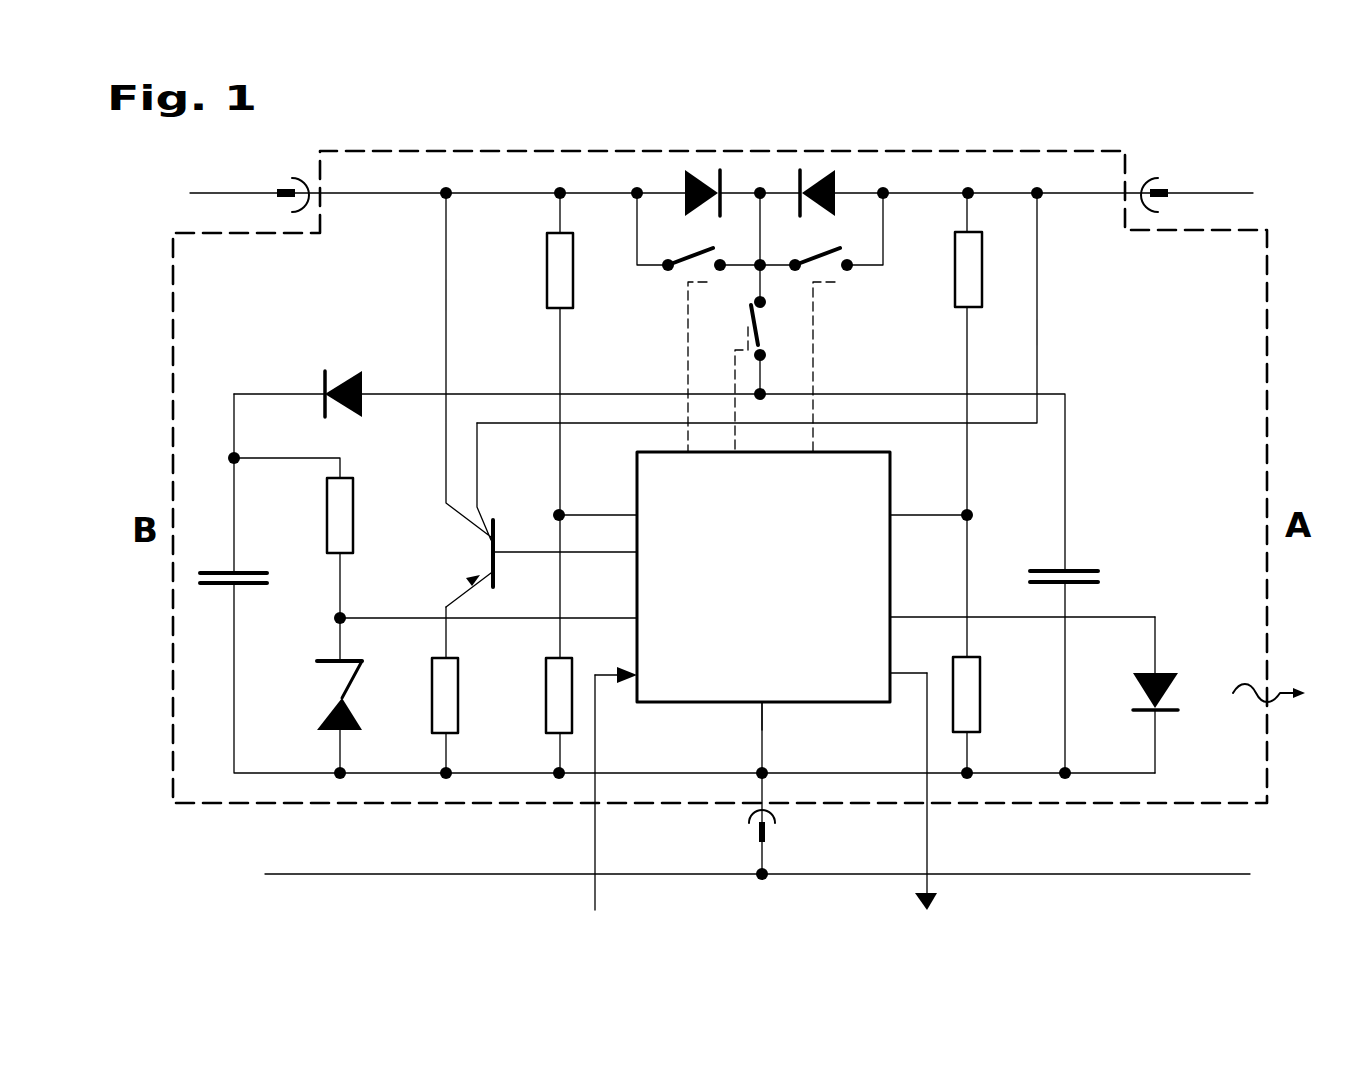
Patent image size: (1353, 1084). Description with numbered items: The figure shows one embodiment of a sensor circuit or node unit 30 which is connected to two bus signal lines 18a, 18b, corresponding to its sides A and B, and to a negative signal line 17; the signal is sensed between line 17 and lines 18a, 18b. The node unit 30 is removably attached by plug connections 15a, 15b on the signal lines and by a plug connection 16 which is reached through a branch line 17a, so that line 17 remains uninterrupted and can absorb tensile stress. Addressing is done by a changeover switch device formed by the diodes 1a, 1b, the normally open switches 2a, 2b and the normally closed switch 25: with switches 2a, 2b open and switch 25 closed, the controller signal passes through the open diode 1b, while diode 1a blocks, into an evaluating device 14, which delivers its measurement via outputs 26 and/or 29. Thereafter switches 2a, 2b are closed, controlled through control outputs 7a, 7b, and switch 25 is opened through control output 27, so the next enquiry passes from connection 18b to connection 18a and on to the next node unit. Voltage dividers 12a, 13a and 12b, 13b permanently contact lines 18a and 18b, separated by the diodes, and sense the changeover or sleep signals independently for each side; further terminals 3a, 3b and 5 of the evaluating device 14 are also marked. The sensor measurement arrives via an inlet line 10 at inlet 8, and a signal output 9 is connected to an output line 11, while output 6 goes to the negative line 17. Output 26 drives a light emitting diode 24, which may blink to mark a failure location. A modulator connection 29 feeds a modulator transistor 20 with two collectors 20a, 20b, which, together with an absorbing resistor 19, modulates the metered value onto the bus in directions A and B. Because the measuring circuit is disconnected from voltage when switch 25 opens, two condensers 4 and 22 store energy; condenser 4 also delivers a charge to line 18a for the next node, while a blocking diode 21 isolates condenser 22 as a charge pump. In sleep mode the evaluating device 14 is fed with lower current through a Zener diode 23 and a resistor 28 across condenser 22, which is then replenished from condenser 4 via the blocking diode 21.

The diode 1a is at (813, 170).
The diode 1b is at (705, 170).
The switch 2a is at (840, 275).
The switch 2b is at (678, 273).
The control output 3a is at (902, 512).
The control output 3b is at (622, 514).
The condenser 4 is at (1070, 562).
The input terminal 5 is at (501, 617).
The output 6 is at (768, 696).
The control output 7a is at (812, 391).
The control output 7b is at (685, 391).
The inlet 8 is at (629, 675).
The signal output 9 is at (894, 670).
The inlet line 10 is at (513, 897).
The output line 11 is at (902, 905).
The resistor of voltage divider 12a is at (1002, 694).
The resistor of voltage divider 12b is at (517, 695).
The resistor of voltage divider 13a is at (1006, 269).
The resistor of voltage divider 13b is at (520, 270).
The evaluating device 14 is at (903, 452).
The plug connection 15a is at (1155, 166).
The plug connection 15b is at (288, 167).
The plug connection 16 is at (787, 829).
The negative signal line 17 is at (1006, 852).
The branch line 17a is at (745, 853).
The signal line 18a is at (1197, 178).
The signal line 18b is at (249, 178).
The absorbing resistor 19 is at (418, 695).
The modulator transistor 20 is at (454, 563).
The line 20a is at (1052, 333).
The line 20b is at (429, 298).
The blocking diode 21 is at (298, 370).
The condenser 22 is at (223, 603).
The Zener diode 23 is at (317, 695).
The light emitting diode 24 is at (1158, 668).
The switch 25 is at (732, 337).
The output 26 is at (996, 615).
The control output 27 is at (745, 414).
The resistor 28 is at (313, 515).
The modulator connection 29 is at (589, 552).
The node unit 30 is at (320, 805).